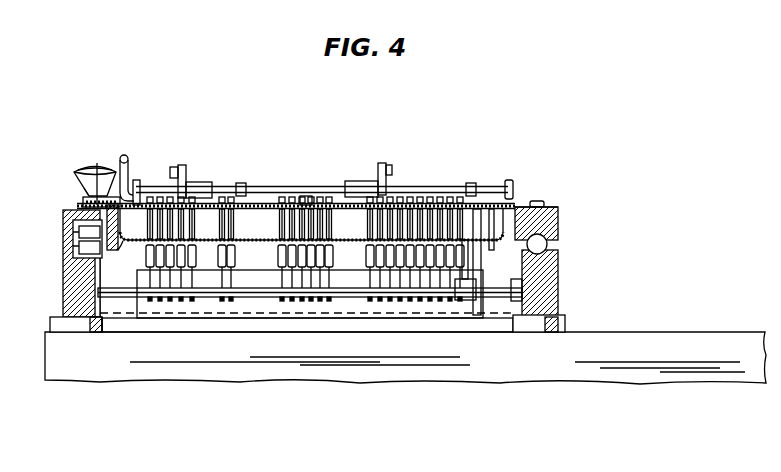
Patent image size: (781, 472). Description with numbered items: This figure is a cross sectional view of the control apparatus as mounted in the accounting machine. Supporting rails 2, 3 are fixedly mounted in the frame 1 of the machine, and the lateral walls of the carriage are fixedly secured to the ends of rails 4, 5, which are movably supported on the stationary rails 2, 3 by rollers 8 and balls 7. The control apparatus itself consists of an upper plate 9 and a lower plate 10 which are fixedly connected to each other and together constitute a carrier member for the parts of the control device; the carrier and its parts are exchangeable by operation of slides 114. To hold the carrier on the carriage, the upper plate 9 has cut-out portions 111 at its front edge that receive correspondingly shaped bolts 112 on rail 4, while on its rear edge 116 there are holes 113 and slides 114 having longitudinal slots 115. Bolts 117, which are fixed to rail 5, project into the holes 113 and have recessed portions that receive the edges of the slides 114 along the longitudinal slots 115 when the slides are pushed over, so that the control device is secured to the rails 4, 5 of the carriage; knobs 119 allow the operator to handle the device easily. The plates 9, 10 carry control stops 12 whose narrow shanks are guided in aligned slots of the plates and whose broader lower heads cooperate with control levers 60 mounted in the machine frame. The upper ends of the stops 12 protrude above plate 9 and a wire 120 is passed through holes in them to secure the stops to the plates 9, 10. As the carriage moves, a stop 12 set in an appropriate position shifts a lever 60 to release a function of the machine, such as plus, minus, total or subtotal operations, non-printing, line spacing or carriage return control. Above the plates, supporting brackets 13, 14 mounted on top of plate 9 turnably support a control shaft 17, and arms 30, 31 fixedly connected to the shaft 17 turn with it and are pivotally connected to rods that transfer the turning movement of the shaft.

The frame 1 is at (700, 334).
The supporting rail 2 is at (558, 286).
The supporting rail 3 is at (64, 283).
The rail 4 is at (558, 219).
The rail 5 is at (113, 251).
The balls 7 is at (548, 247).
The rollers 8 is at (72, 239).
The upper plate 9 is at (268, 188).
The lower plate 10 is at (347, 239).
The control stops 12 is at (283, 226).
The supporting bracket 13 is at (139, 183).
The supporting bracket 14 is at (509, 182).
The control shaft 17 is at (306, 196).
The arm 30 is at (197, 182).
The arm 31 is at (357, 181).
The control levers 60 is at (368, 256).
The cut-out portions 111 is at (556, 209).
The bolts 112 is at (540, 201).
The holes 113 is at (121, 244).
The slides 114 is at (78, 190).
The longitudinal slots 115 is at (97, 166).
The rear edge 116 is at (83, 207).
The bolts 117 is at (128, 172).
The knobs 119 is at (84, 170).
The wire 120 is at (240, 185).